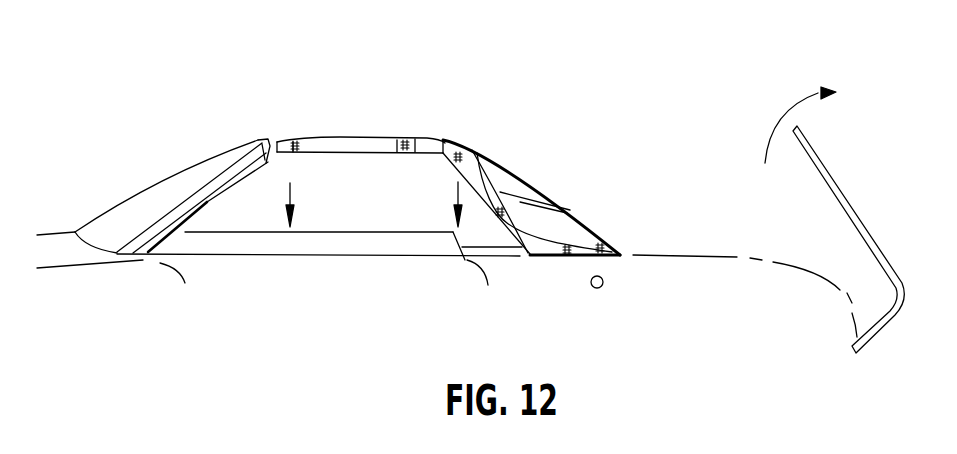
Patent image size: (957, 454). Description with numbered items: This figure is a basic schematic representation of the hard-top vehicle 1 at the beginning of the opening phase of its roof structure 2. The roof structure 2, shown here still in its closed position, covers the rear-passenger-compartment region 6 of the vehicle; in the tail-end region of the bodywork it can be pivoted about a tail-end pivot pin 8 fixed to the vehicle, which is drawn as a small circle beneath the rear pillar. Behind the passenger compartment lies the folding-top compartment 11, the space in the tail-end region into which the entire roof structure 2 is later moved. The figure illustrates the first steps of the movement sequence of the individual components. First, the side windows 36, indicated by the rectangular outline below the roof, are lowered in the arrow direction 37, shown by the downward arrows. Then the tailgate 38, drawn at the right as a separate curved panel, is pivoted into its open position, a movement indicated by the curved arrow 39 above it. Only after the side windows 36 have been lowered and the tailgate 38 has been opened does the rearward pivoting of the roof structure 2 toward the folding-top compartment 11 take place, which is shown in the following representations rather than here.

The hard-top vehicle 1 is at (198, 102).
The roof structure 2 is at (425, 53).
The rear-passenger-compartment region 6 is at (403, 213).
The tail-end pivot pin 8 is at (592, 302).
The folding-top compartment 11 is at (745, 296).
The side windows 36 is at (463, 257).
The arrow direction 37 is at (283, 198).
The tailgate 38 is at (828, 157).
The arrow 39 is at (773, 122).